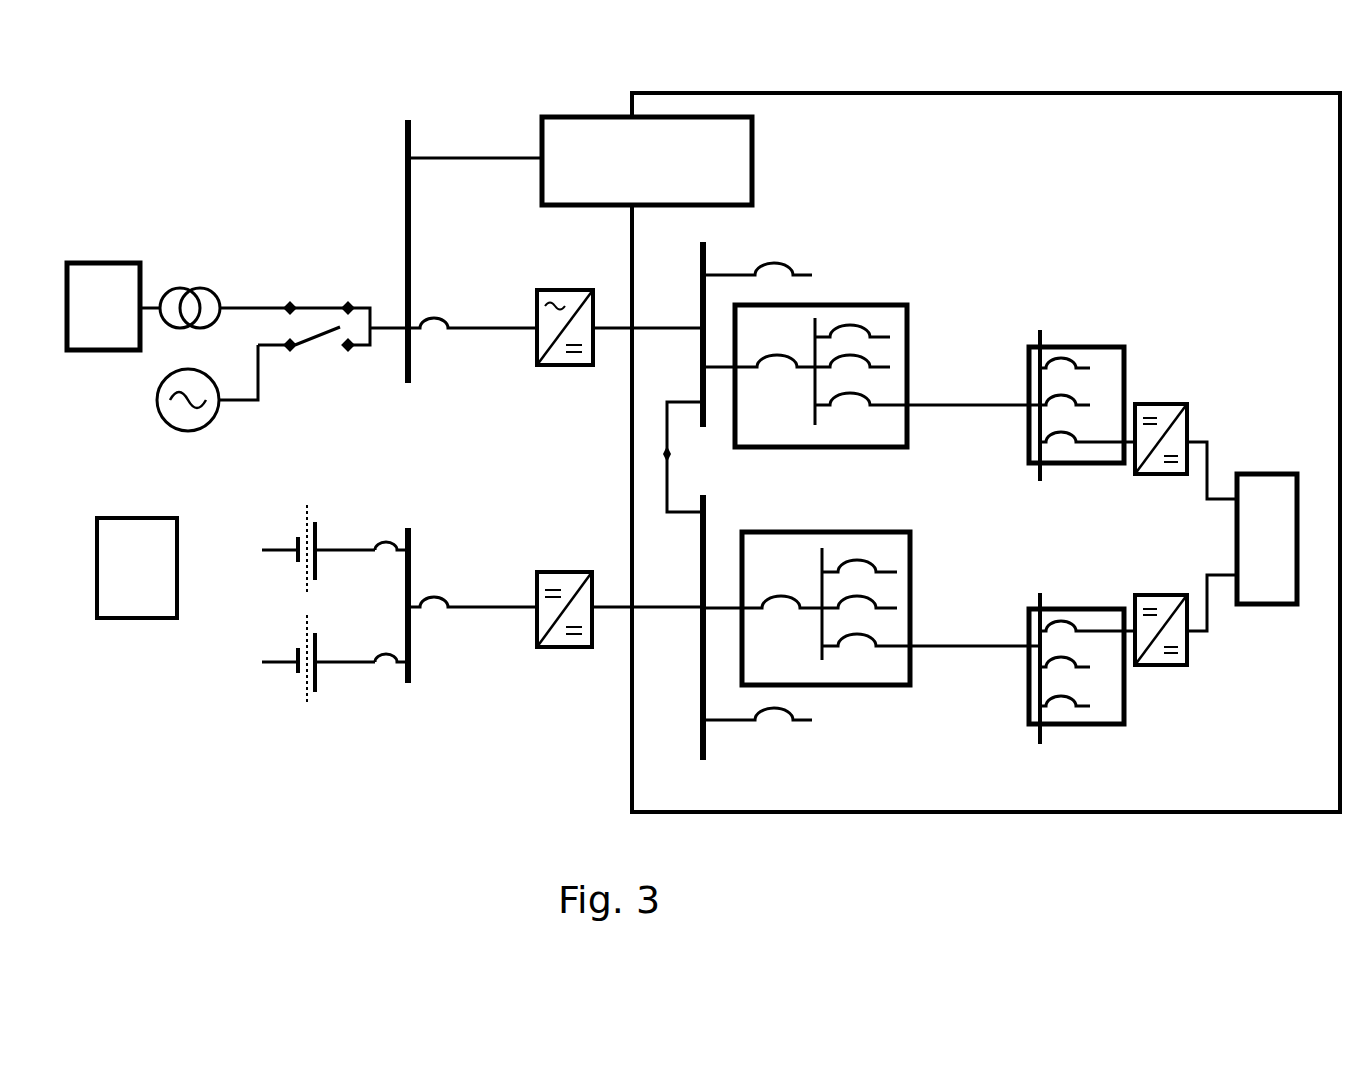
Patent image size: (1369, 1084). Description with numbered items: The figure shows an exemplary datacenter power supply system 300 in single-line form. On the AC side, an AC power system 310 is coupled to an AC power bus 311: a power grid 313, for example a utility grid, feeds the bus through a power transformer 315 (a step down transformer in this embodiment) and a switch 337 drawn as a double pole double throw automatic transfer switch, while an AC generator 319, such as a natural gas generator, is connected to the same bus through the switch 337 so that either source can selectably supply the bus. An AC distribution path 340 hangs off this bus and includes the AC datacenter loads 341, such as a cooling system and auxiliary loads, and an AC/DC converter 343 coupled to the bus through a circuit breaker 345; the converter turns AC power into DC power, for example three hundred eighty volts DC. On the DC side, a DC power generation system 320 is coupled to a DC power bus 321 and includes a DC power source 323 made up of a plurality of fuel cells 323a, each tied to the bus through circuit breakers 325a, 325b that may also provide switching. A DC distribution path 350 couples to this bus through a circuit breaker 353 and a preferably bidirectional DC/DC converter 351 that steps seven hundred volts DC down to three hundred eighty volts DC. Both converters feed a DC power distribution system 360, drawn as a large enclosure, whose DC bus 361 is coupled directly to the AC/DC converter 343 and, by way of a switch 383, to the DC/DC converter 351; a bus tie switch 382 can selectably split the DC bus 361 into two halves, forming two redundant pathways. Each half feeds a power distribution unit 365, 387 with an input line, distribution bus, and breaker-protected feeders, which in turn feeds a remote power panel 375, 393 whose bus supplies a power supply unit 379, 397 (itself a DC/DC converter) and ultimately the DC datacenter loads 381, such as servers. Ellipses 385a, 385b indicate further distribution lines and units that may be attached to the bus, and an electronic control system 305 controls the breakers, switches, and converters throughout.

The datacenter power supply system 300 is at (485, 805).
The electronic control system 305 is at (137, 568).
The AC power system 310 is at (237, 160).
The AC power bus 311 is at (407, 182).
The power grid 313 is at (103, 265).
The transformer 315 is at (186, 290).
The AC generator 319 is at (165, 425).
The switch 337 is at (335, 302).
The AC datacenter loads 341 is at (542, 135).
The AC distribution path 340 is at (497, 350).
The AC/DC converter 343 is at (590, 290).
The circuit breaker 345 is at (430, 318).
The DC power generation system 320 is at (357, 722).
The DC power bus 321 is at (410, 672).
The DC power source 323 is at (283, 623).
The fuel cell 323a is at (305, 528).
The circuit breaker 325a is at (385, 545).
The circuit breaker 325b is at (385, 657).
The DC distribution path 350 is at (520, 667).
The DC/DC converter 351 is at (560, 572).
The circuit breaker 353 is at (440, 600).
The DC power distribution system 360 is at (827, 812).
The DC bus 361 is at (706, 258).
The bus tie switch 382 is at (672, 458).
The switch 383 is at (668, 606).
The ellipsis 385a is at (865, 262).
The ellipsis 385b is at (862, 722).
The power distribution unit 365 is at (910, 345).
The power distribution unit 387 is at (905, 532).
The remote power panel 375 is at (1100, 347).
The remote power panel 393 is at (1095, 609).
The power supply unit 379 is at (1165, 404).
The power supply unit 397 is at (1165, 595).
The DC datacenter loads 381 is at (1272, 474).